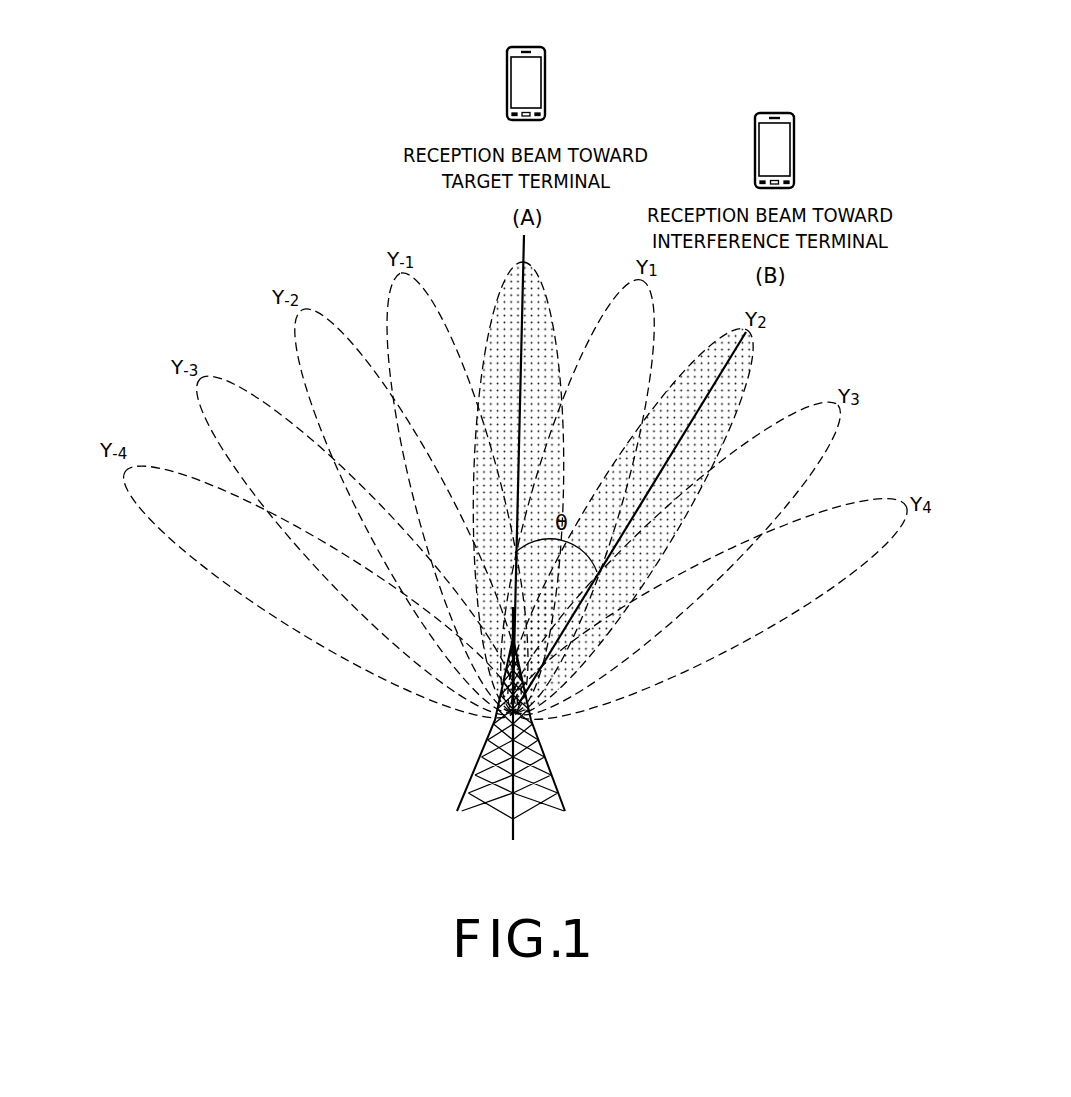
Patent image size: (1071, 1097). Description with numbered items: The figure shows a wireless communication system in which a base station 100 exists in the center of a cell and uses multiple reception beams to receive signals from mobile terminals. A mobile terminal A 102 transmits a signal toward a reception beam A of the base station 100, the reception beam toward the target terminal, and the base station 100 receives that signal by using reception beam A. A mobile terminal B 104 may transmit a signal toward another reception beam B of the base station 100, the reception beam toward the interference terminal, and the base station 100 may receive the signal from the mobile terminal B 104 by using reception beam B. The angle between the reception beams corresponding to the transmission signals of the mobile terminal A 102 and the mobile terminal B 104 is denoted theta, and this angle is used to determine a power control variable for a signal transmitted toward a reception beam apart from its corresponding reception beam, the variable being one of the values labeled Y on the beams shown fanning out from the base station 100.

The base station 100 is at (605, 723).
The mobile terminal A 102 is at (530, 66).
The mobile terminal B 104 is at (781, 135).